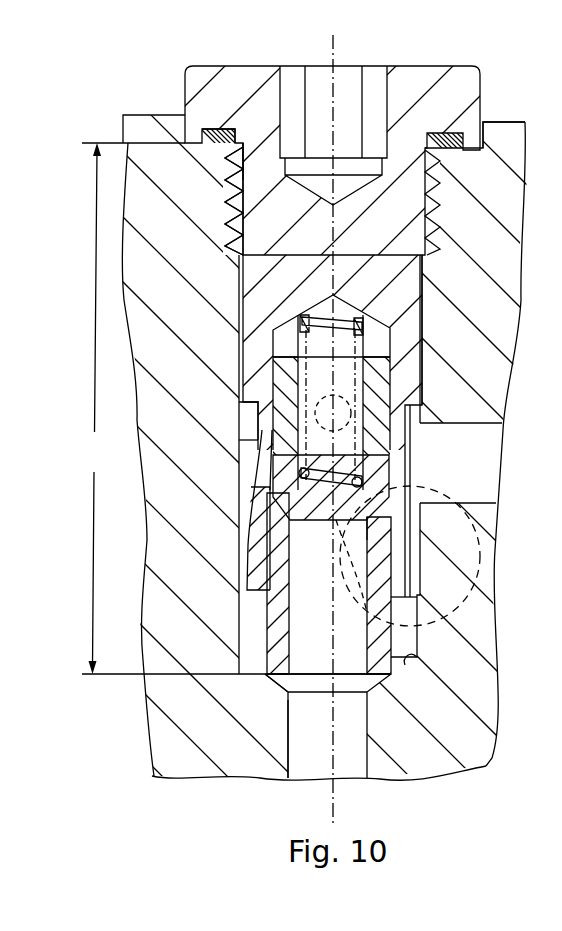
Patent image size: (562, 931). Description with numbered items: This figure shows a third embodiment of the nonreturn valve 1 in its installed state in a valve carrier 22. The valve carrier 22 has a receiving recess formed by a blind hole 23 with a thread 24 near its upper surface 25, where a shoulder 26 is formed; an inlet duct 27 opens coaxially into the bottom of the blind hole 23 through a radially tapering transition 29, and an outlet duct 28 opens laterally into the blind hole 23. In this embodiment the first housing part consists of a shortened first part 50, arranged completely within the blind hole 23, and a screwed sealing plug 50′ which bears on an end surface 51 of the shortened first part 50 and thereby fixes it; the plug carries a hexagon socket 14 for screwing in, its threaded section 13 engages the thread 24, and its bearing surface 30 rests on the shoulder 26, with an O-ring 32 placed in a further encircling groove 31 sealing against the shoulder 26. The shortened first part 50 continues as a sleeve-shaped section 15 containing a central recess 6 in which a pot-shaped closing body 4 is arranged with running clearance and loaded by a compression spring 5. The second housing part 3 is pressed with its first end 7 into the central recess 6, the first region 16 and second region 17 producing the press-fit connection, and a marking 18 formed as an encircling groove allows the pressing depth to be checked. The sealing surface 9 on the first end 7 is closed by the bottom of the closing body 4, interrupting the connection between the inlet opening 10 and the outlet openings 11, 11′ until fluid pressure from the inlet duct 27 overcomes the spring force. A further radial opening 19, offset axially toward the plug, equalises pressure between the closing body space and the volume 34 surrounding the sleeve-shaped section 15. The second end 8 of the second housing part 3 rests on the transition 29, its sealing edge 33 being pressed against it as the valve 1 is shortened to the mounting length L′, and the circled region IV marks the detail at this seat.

The valve 1 is at (414, 63).
The second housing part 3 is at (258, 634).
The closing body 4 is at (365, 380).
The compression spring 5 is at (395, 323).
The central recess 6 is at (390, 355).
The first end 7 is at (392, 565).
The second end 8 is at (392, 678).
The sealing surface 9 is at (400, 530).
The inlet opening 10 is at (345, 665).
The outlet opening 11 is at (240, 456).
The outlet opening 11′ is at (395, 458).
The threaded section 13 is at (207, 232).
The thread 24 is at (234, 201).
The hexagon socket 14 is at (350, 78).
The sleeve-shaped section 15 is at (247, 540).
The first region 16 is at (265, 505).
The second region 17 is at (253, 580).
The marking 18 is at (247, 612).
The further radial opening 19 is at (268, 424).
The valve carrier 22 is at (508, 121).
The blind hole 23 is at (247, 487).
The upper surface 25 is at (142, 112).
The shoulder 26 is at (206, 126).
The inlet duct 27 is at (365, 768).
The outlet duct 28 is at (492, 477).
The transition 29 is at (417, 659).
The bearing surface 30 is at (466, 148).
The further encircling groove 31 is at (228, 164).
The O-ring 32 is at (240, 128).
The sealing edge 33 is at (262, 678).
The volume 34 is at (417, 433).
The shortened first part 50 is at (240, 303).
The screwed sealing plug 50′ is at (402, 248).
The end surface 51 is at (436, 205).
The mounting length L′ is at (160, 408).
The detail circle IV is at (481, 554).